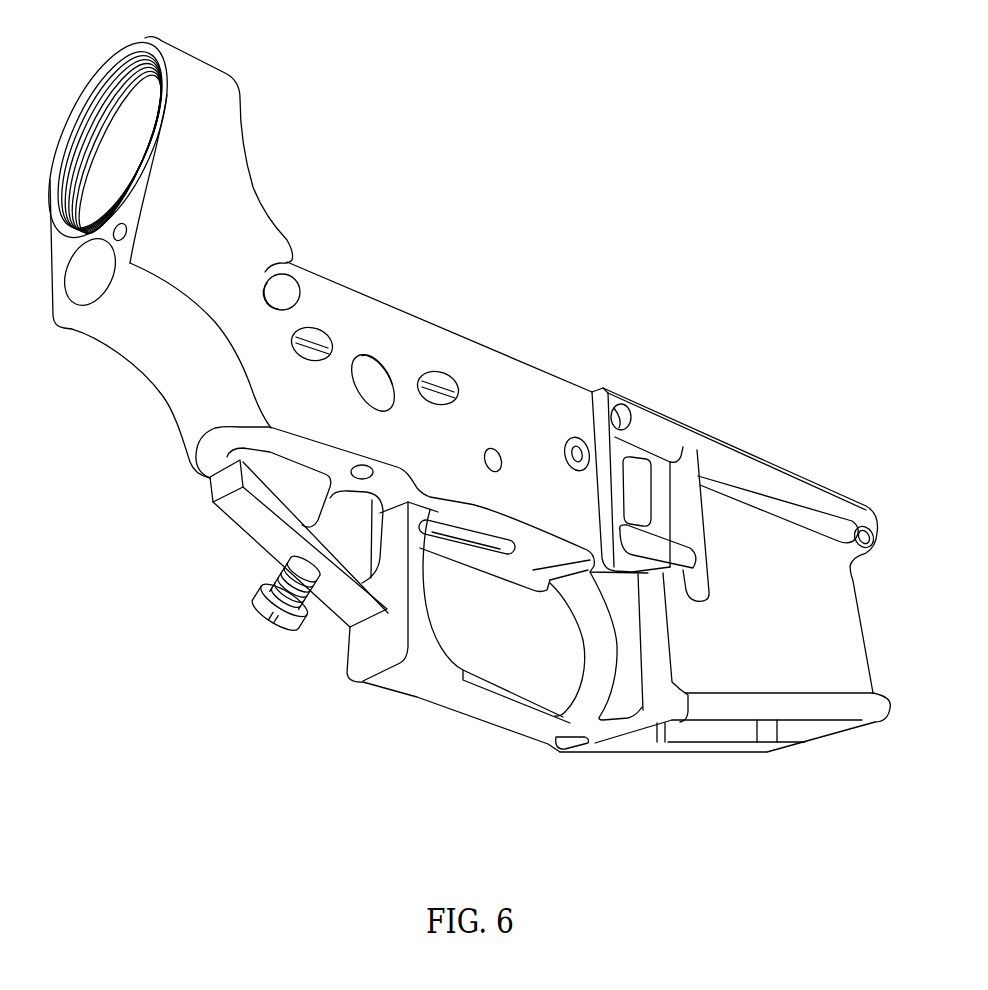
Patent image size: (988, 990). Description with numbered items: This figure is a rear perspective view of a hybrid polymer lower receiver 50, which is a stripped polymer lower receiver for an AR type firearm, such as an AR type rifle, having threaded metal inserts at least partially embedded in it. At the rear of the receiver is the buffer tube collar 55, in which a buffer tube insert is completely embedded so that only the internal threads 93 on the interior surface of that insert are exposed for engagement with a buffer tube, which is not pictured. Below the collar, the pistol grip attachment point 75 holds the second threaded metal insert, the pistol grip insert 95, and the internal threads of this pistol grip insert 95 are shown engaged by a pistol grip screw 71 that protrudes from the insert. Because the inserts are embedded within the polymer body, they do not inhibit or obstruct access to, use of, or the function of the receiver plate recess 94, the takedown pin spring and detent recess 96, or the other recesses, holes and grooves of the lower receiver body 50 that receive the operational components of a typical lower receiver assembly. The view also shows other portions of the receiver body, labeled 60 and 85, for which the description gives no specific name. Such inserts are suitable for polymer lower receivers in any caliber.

The hybrid polymer lower receiver 50 is at (426, 247).
The buffer tube collar 55 is at (232, 110).
The rear body portion 60 is at (868, 637).
The pistol grip screw 71 is at (267, 640).
The pistol grip attachment point 75 is at (240, 518).
The trigger guard 85 is at (493, 712).
The internal threads 93 is at (110, 140).
The receiver plate recess 94 is at (88, 287).
The pistol grip insert 95 is at (280, 553).
The takedown pin spring and detent recess 96 is at (113, 239).